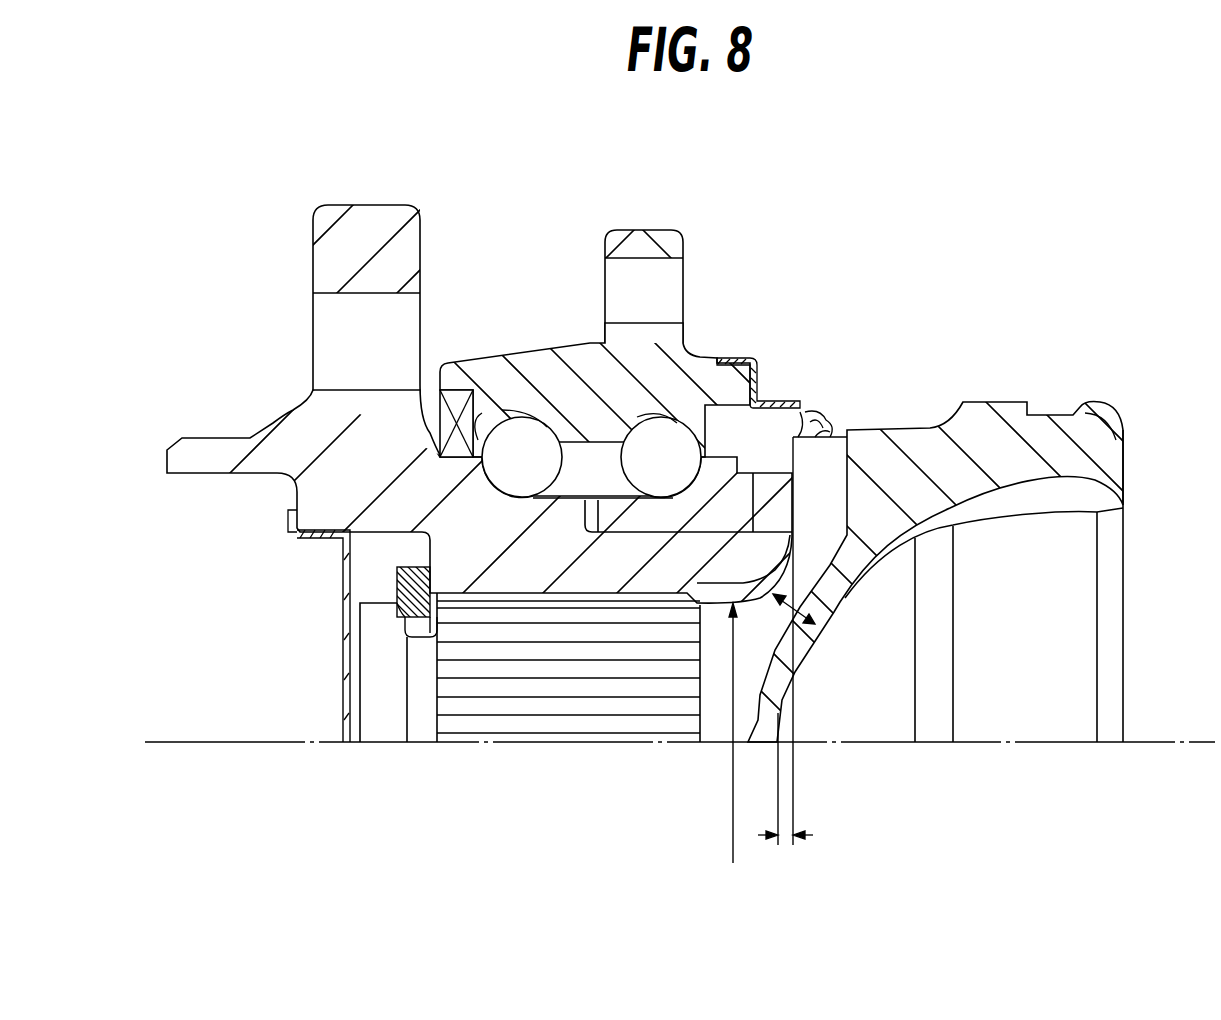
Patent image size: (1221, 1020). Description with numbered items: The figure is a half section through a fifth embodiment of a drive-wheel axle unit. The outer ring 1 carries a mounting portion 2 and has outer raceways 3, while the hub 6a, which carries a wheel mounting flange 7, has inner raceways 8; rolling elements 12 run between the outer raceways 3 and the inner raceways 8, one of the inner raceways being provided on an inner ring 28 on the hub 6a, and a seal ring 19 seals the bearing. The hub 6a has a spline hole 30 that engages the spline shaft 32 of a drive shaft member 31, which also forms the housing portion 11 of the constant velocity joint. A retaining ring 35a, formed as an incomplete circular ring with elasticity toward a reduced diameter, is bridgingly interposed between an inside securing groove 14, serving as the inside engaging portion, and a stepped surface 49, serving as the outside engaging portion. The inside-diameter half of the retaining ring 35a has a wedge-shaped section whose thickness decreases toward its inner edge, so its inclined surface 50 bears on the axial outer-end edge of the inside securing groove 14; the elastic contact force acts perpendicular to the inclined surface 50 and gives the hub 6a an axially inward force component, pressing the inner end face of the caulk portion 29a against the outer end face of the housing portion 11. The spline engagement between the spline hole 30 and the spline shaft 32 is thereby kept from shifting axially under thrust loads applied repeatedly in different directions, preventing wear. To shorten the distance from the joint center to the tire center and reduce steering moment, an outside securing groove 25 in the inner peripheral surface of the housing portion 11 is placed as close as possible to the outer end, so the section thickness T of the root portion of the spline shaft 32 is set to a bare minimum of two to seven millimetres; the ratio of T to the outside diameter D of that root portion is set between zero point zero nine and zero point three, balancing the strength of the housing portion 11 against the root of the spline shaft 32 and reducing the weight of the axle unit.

The outer ring 1 is at (583, 338).
The mounting portion 2 is at (645, 245).
The outer raceway 3 is at (575, 434).
The hub 6a is at (282, 396).
The mounting flange 7 is at (372, 215).
The inner raceway 8 is at (518, 440).
The housing portion 11 is at (968, 425).
The rolling element 12 is at (522, 432).
The inside securing groove 14 is at (372, 703).
The seal ring 19 is at (455, 408).
The outside securing groove 25 is at (1123, 508).
The inner ring 28 is at (673, 518).
The caulk portion 29a is at (787, 505).
The spline hole 30 is at (553, 595).
The drive shaft member 31 is at (875, 722).
The spline shaft 32 is at (593, 703).
The retaining ring 35a is at (410, 590).
The stepped surface 49 is at (400, 570).
The inclined surface 50 is at (400, 607).
The outside diameter of the spline shaft root portion D is at (742, 733).
The section thickness of the spline shaft root portion T is at (812, 620).